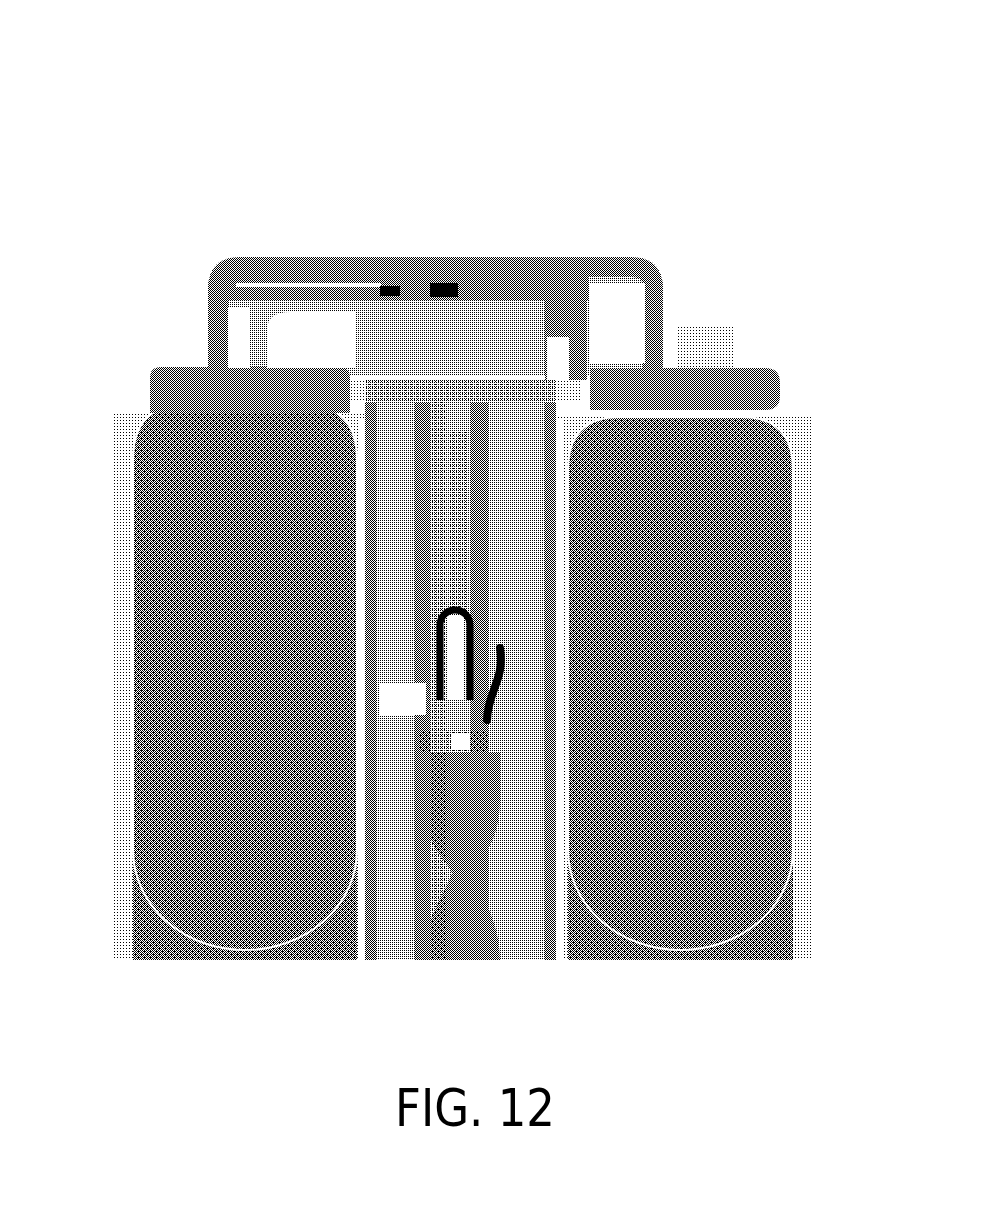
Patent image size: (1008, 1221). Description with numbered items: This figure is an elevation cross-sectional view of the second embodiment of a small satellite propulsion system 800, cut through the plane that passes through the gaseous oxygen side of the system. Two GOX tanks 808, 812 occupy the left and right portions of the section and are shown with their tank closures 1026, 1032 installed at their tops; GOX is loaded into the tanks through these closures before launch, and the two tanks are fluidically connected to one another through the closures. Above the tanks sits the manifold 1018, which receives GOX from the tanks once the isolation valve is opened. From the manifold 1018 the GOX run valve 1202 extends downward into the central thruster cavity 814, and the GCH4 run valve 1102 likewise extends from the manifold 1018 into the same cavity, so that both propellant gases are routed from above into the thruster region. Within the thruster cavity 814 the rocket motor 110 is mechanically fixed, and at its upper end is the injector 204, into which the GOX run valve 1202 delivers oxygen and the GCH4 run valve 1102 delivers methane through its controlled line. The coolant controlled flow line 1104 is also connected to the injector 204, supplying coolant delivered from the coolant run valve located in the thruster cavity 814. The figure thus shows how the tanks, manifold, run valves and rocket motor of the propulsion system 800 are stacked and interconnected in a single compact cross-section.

The small satellite propulsion system 800 is at (464, 528).
The manifold 1018 is at (478, 195).
The second GOX tank closure 1032 is at (178, 367).
The first GOX tank closure 1026 is at (757, 368).
The GCH4 run valve 1102 is at (427, 562).
The GOX run valve 1202 is at (505, 555).
The thruster cavity 814 is at (420, 712).
The coolant controlled flow line 1104 is at (468, 668).
The GOX tank 812 is at (310, 932).
The GOX tank 808 is at (690, 952).
The rocket motor 110 is at (447, 797).
The injector 204 is at (487, 738).